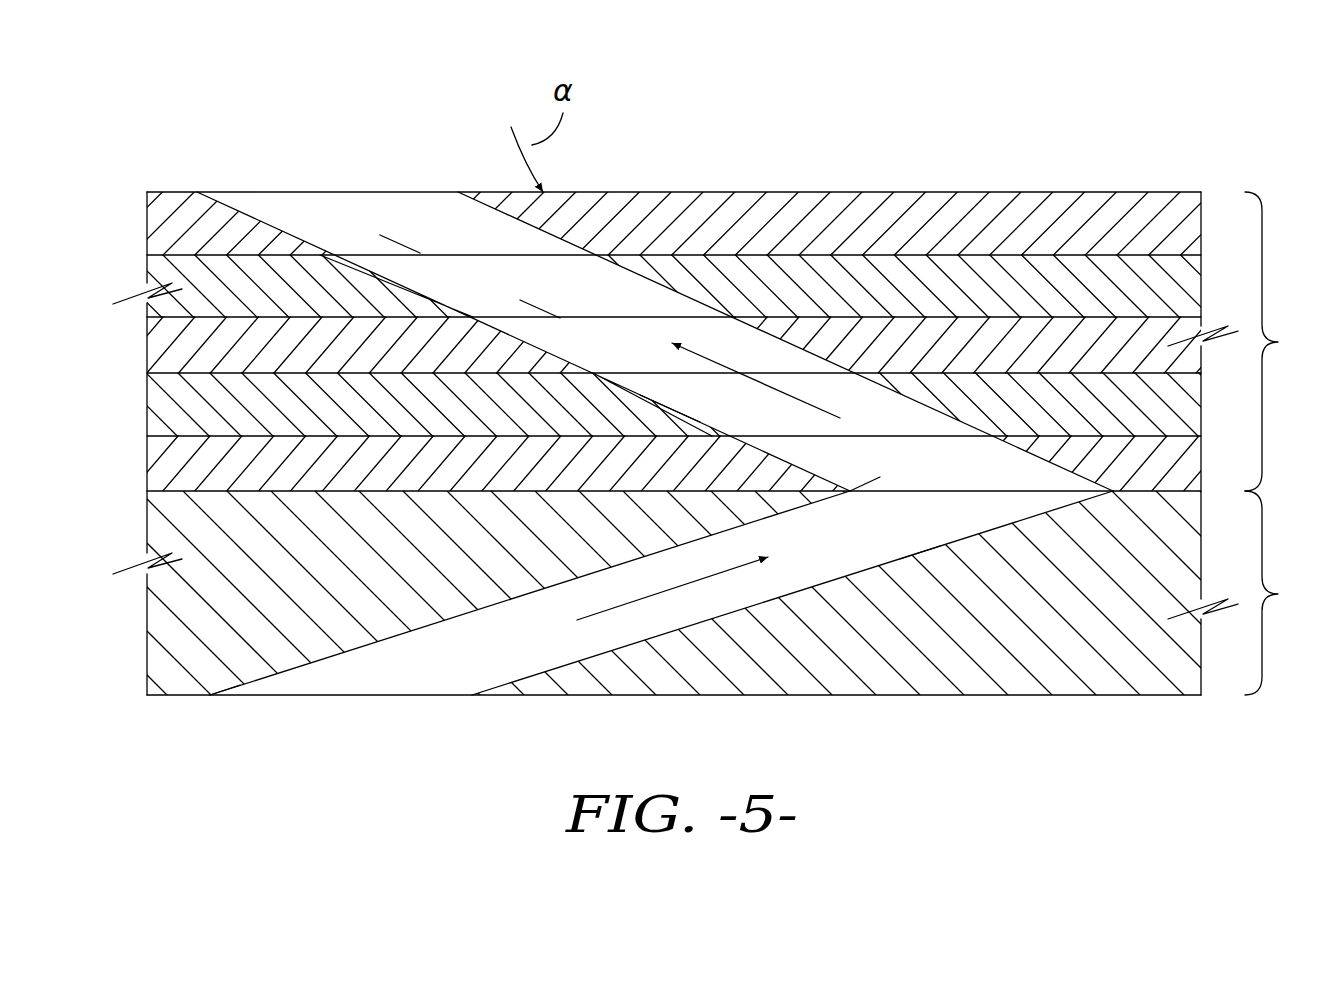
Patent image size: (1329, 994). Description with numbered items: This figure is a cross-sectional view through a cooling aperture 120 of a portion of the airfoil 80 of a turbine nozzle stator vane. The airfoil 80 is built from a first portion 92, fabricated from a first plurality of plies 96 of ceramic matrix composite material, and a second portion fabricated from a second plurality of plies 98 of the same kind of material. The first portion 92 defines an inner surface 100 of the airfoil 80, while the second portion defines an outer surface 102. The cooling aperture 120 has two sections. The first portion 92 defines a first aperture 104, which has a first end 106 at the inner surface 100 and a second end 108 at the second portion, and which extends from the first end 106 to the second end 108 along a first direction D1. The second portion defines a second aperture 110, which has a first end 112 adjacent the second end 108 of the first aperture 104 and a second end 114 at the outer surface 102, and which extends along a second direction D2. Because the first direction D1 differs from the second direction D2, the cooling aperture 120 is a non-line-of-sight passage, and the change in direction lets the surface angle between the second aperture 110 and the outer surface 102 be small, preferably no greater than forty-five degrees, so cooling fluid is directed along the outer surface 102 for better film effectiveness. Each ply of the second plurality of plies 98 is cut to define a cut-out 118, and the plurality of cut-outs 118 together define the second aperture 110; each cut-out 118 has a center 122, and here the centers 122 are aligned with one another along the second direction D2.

The airfoil 80 is at (213, 112).
The first portion 92 is at (1060, 678).
The first plurality of plies 96 is at (1285, 593).
The second plurality of plies 98 is at (1285, 341).
The inner surface 100 is at (917, 696).
The outer surface 102 is at (975, 192).
The first aperture 104 is at (430, 658).
The first end 106 is at (300, 696).
The second end 108 is at (900, 485).
The second aperture 110 is at (312, 192).
The first end 112 is at (1008, 492).
The second end 114 is at (385, 192).
The cut-out 118 is at (722, 338).
The cooling aperture 120 is at (920, 510).
The center 122 is at (400, 221).
The first direction D1 is at (608, 607).
The second direction D2 is at (808, 403).